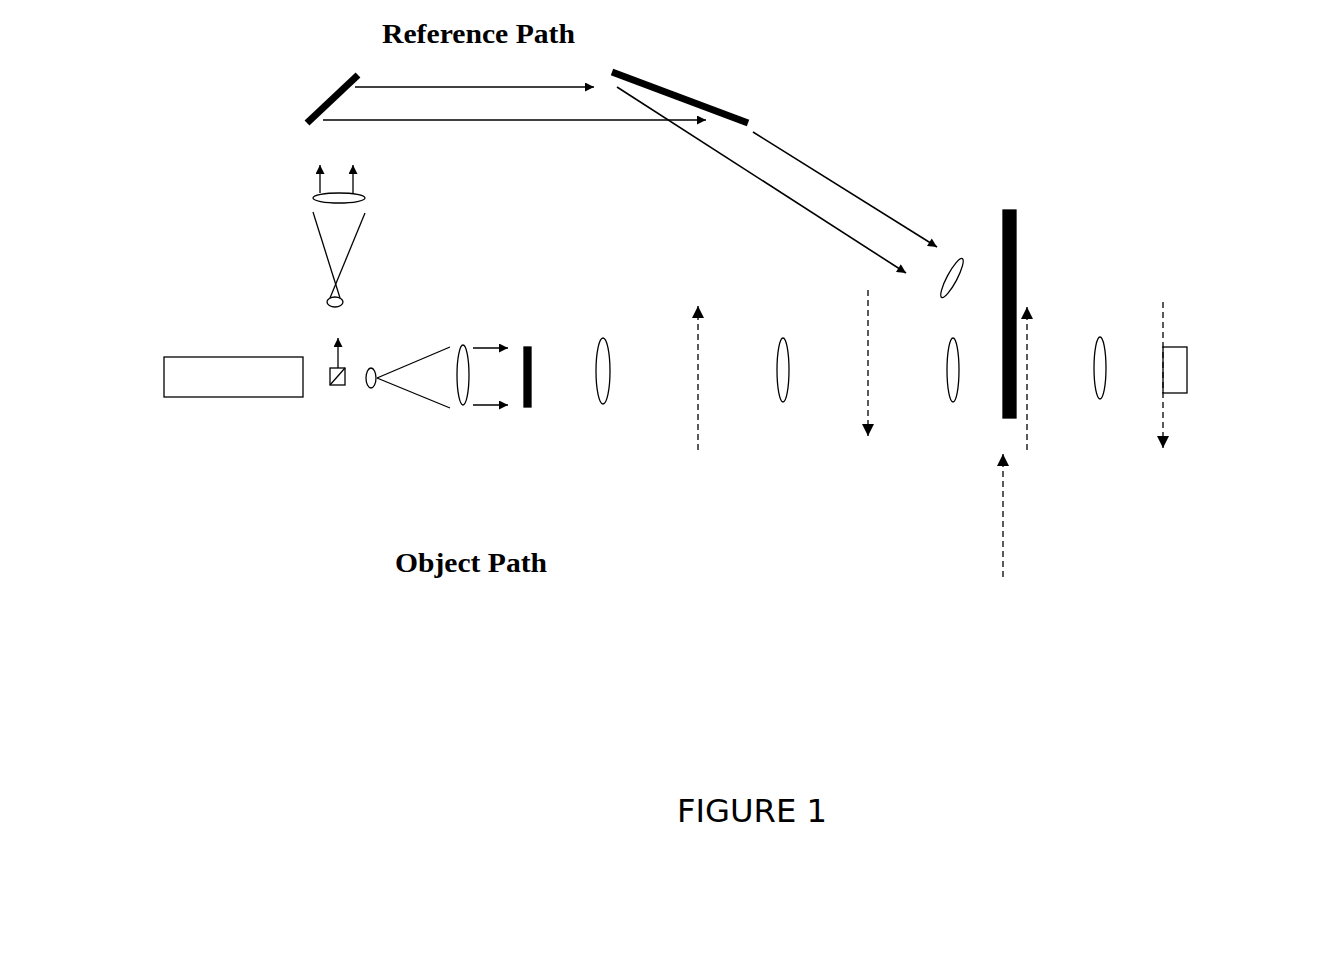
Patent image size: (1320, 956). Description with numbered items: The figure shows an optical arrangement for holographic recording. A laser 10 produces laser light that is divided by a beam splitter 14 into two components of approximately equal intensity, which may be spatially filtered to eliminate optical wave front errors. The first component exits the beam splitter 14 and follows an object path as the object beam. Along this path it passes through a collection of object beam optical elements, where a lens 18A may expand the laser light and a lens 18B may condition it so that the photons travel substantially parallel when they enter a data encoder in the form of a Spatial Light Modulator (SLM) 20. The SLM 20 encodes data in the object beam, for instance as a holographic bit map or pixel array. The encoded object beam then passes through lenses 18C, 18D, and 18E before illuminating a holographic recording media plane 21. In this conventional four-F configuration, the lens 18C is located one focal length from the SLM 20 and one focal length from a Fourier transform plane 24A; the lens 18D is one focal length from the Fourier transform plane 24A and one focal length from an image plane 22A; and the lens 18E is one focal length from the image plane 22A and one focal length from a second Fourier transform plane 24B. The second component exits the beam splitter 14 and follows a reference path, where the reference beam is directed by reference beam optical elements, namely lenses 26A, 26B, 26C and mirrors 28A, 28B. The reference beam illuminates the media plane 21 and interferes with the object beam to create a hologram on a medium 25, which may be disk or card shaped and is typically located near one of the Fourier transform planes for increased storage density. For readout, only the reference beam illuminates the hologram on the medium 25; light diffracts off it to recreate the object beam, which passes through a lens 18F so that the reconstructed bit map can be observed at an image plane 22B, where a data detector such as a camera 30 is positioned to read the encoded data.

The laser 10 is at (233, 377).
The beam splitter 14 is at (335, 387).
The lens 18A is at (370, 370).
The lens 18B is at (468, 347).
The lens 18C is at (603, 405).
The lens 18D is at (783, 402).
The lens 18E is at (953, 402).
The lens 18F is at (1100, 400).
The Spatial Light Modulator (SLM) 20 is at (528, 408).
The holographic recording media plane 21 is at (1003, 559).
The image plane 22A is at (867, 421).
The image plane 22B is at (1164, 427).
The Fourier transform plane 24A is at (703, 342).
The Fourier transform plane 24B is at (1082, 339).
The medium 25 is at (1010, 210).
The lens 26A is at (345, 297).
The lens 26B is at (364, 200).
The lens 26C is at (957, 258).
The mirror 28A is at (327, 100).
The mirror 28B is at (672, 90).
The camera 30 is at (1233, 395).